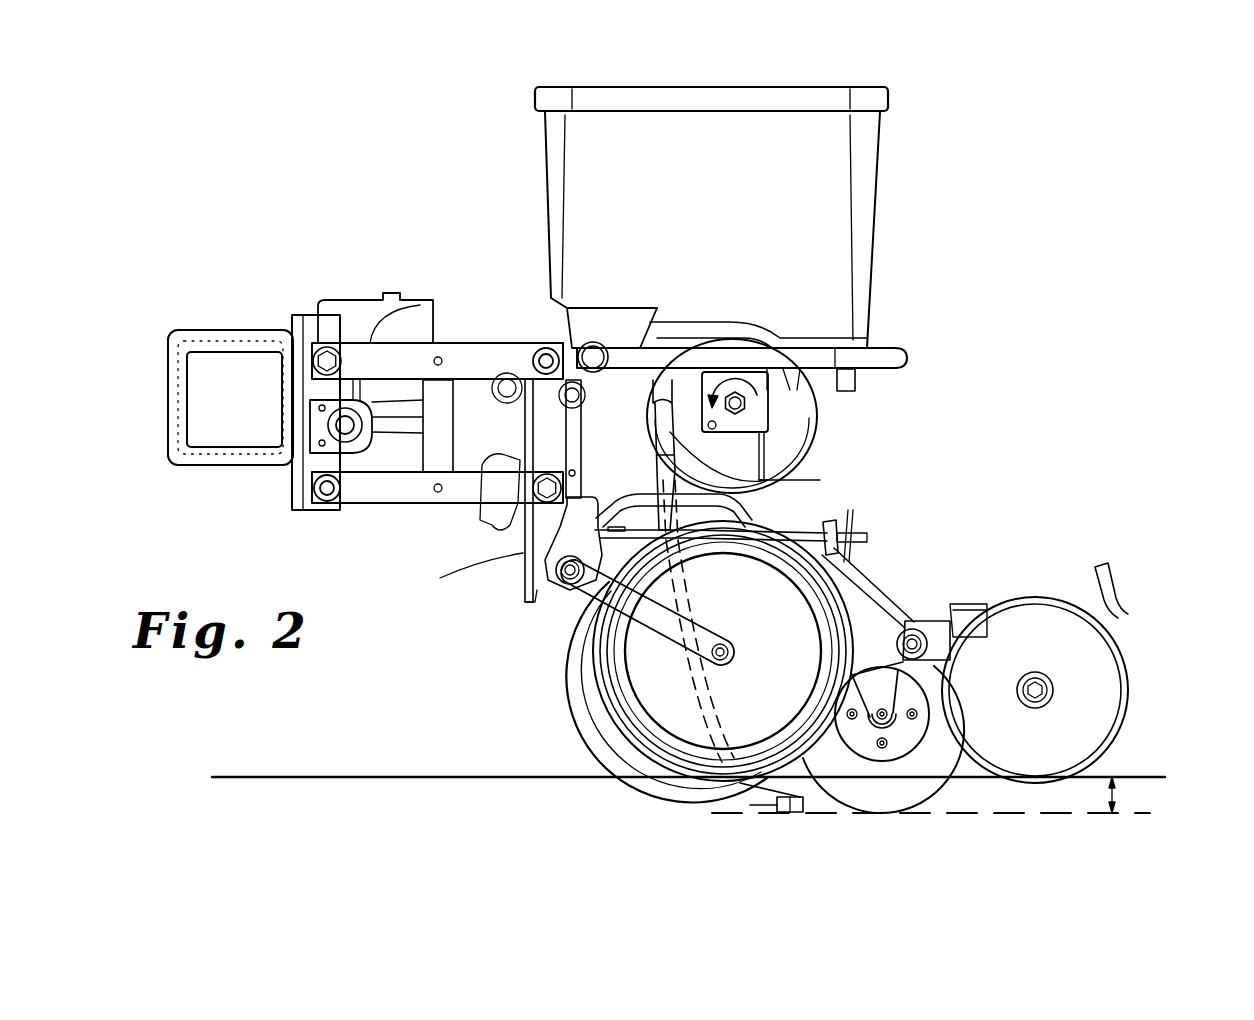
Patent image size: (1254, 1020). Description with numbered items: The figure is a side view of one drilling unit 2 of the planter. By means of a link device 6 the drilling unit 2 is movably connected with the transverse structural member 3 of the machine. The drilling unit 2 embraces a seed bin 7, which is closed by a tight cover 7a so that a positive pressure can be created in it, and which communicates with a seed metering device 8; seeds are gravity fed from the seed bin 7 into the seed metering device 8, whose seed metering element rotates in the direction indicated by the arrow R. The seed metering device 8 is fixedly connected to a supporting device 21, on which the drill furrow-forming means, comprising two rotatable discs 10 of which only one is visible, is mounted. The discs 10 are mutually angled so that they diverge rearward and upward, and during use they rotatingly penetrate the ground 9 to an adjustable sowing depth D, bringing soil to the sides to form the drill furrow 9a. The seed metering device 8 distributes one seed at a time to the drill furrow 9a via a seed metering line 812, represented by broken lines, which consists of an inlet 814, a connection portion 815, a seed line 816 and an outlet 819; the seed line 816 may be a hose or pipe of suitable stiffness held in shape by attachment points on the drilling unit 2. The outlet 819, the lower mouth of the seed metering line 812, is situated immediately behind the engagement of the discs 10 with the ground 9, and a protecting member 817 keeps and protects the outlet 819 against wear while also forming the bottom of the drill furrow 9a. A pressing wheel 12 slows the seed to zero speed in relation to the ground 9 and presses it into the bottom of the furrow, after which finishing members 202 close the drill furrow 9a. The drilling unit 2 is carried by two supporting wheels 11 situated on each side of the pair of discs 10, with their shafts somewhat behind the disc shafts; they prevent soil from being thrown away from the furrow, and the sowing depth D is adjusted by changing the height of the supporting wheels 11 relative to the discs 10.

The drilling unit 2 is at (980, 374).
The transverse structural member 3 is at (172, 392).
The link device 6 is at (460, 285).
The seed bin 7 is at (711, 185).
The tight cover 7a is at (673, 86).
The seed metering device 8 is at (813, 370).
The arrow indicating rotation R is at (747, 383).
The ground 9 is at (1145, 778).
The drill furrow 9a is at (1020, 813).
The rotatable discs 10 is at (562, 722).
The supporting wheels 11 is at (840, 575).
The pressing wheel 12 is at (925, 803).
The supporting device 21 is at (520, 553).
The finishing members 202 is at (1120, 641).
The seed metering line 812 is at (690, 590).
The inlet 814 is at (762, 480).
The connection portion 815 is at (655, 443).
The seed line 816 is at (682, 682).
The protecting member 817 is at (747, 800).
The outlet 819 is at (808, 800).
The sowing depth D is at (1112, 793).